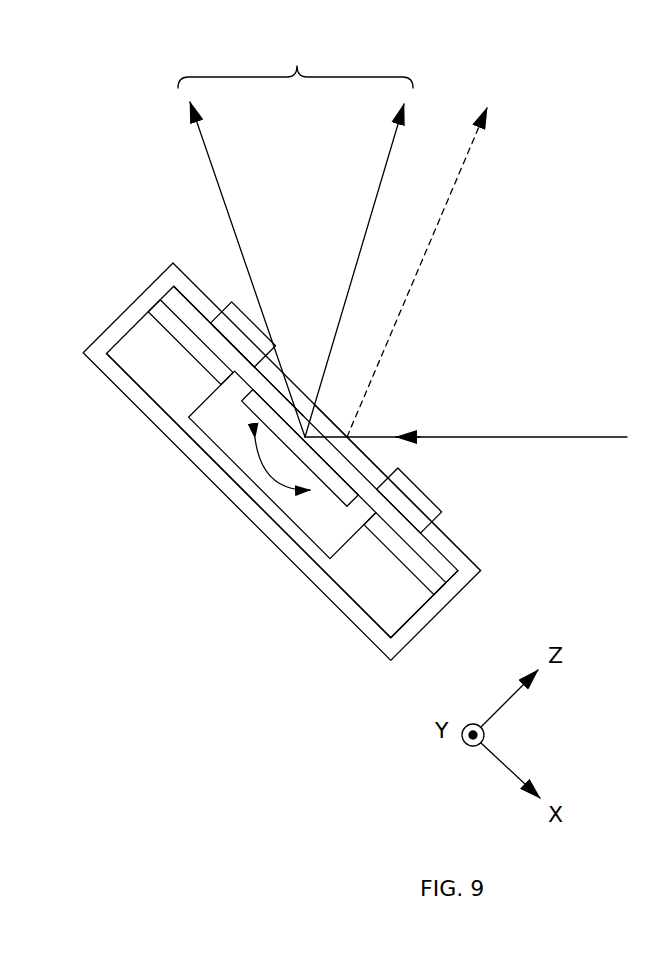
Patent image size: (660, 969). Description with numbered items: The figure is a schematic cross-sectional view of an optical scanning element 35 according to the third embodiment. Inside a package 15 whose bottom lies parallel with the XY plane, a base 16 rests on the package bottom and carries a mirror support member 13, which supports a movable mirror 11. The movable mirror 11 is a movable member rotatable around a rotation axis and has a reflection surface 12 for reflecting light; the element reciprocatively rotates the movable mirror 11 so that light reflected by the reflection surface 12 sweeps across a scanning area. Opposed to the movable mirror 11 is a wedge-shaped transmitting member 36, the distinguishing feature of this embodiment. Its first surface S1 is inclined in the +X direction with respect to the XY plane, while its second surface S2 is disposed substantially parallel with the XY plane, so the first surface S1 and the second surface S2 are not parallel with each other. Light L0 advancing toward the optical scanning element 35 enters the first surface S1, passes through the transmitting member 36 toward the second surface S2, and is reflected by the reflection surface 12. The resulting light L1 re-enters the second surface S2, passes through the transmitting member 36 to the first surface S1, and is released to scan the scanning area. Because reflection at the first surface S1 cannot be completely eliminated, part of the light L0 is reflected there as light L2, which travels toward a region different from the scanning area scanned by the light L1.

The movable mirror 11 is at (348, 492).
The reflection surface 12 is at (271, 397).
The mirror support member 13 is at (181, 328).
The package 15 is at (340, 598).
The base 16 is at (388, 617).
The optical scanning element 35 is at (168, 208).
The wedge-shaped transmitting member 36 is at (404, 474).
The first surface S1 is at (405, 497).
The second surface S2 is at (263, 373).
The light L0 is at (556, 435).
The light reflected by the reflection surface L1 is at (295, 236).
The light reflected by the first surface L2 is at (463, 172).